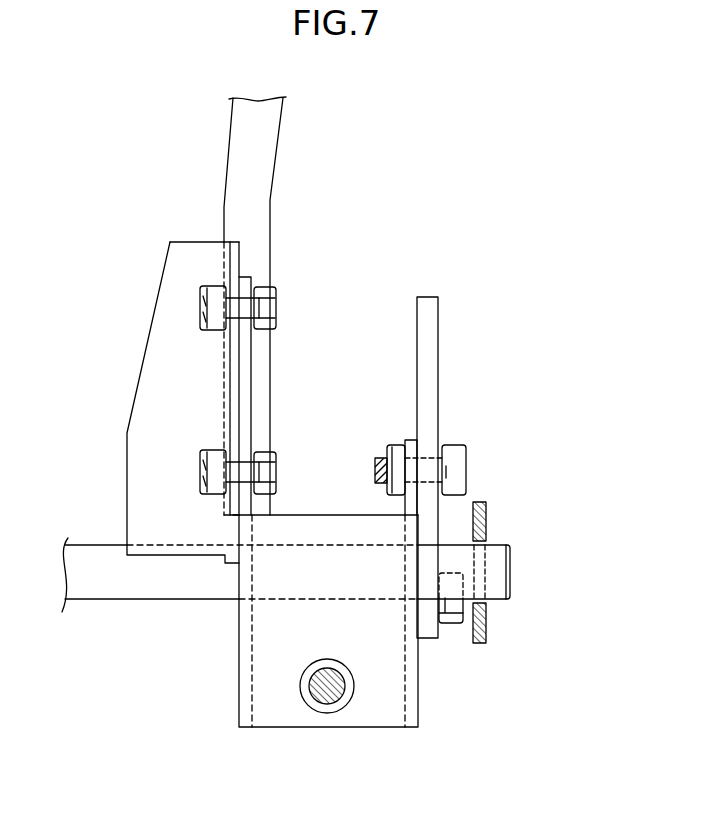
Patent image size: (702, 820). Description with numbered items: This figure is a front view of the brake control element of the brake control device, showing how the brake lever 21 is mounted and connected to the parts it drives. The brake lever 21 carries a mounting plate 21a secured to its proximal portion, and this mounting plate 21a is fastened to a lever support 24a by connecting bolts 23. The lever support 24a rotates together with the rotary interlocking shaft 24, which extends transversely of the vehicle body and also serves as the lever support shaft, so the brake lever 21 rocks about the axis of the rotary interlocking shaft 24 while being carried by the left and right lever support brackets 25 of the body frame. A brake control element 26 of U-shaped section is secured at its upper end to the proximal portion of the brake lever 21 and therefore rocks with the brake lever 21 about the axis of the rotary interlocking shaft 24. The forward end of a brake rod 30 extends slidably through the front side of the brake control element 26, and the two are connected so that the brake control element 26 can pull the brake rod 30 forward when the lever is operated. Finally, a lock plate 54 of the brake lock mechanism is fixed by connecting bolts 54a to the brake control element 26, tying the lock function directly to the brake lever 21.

The brake lever 21 is at (253, 147).
The mounting plate 21a is at (248, 392).
The connecting bolts 23 is at (270, 304).
The rotary interlocking shaft 24 is at (128, 572).
The lever support 24a is at (157, 370).
The lever support bracket 25 is at (488, 513).
The brake control element 26 is at (238, 690).
The brake rod 30 is at (310, 683).
The lock plate 54 is at (430, 360).
The connecting bolts 54a is at (462, 470).